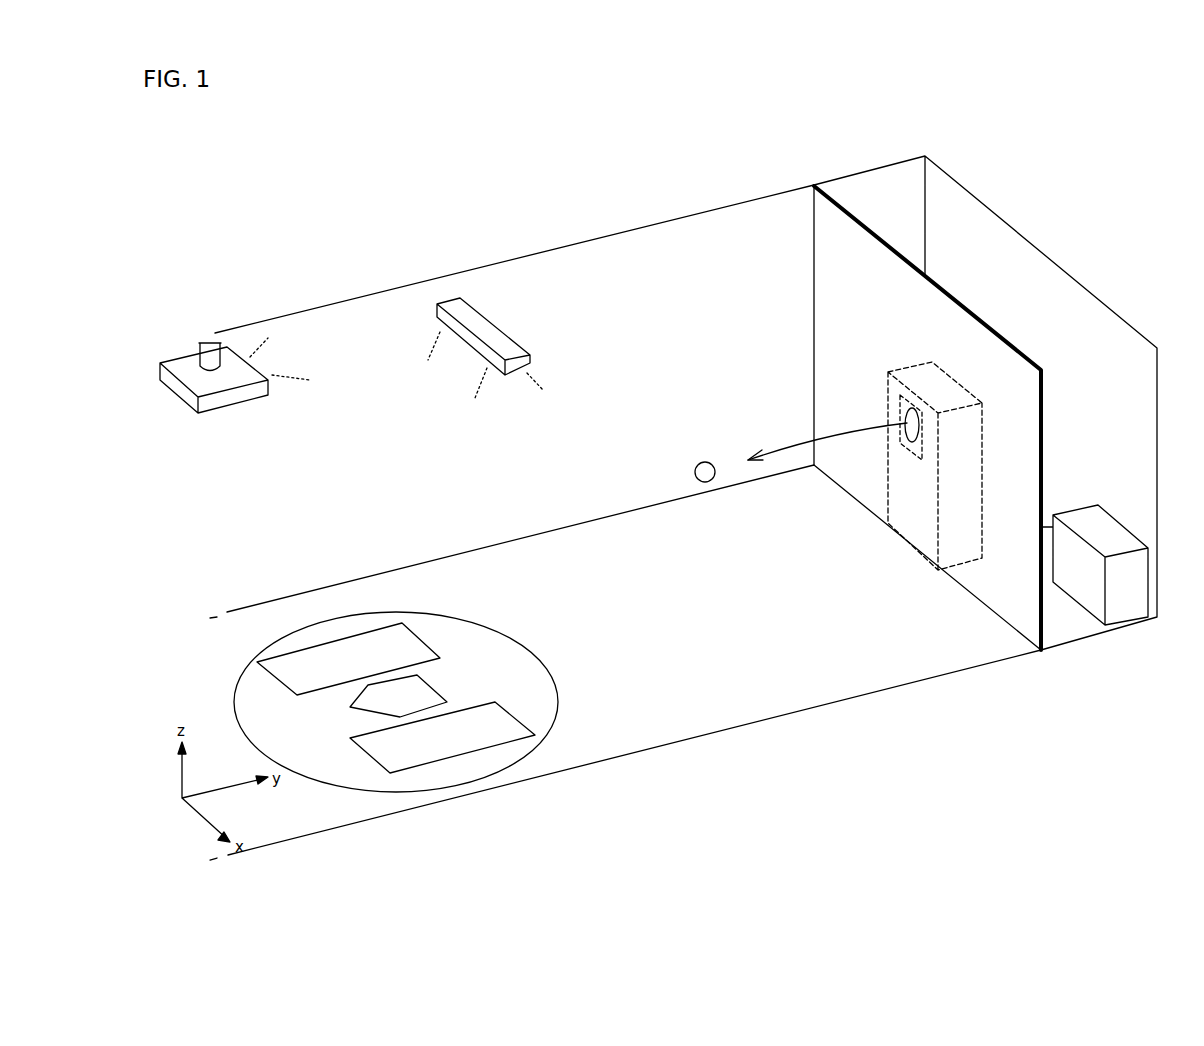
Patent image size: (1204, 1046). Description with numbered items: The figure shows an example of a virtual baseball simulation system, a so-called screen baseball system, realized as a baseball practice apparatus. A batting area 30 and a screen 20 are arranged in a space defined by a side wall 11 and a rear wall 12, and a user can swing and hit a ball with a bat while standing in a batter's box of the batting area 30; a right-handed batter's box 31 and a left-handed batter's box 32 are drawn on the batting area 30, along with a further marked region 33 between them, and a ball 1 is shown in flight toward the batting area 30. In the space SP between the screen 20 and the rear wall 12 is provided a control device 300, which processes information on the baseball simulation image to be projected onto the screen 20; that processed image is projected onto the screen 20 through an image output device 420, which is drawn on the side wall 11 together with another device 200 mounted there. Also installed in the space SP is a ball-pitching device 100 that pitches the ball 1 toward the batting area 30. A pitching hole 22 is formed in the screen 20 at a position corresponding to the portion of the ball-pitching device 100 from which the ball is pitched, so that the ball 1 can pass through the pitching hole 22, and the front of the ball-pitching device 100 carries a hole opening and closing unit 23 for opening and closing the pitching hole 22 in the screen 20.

The ball 1 is at (703, 462).
The side wall 11 is at (580, 243).
The rear wall 12 is at (1053, 262).
The screen 20 is at (892, 250).
The pitching hole 22 is at (905, 418).
The hole opening and closing unit 23 is at (897, 443).
The batting area 30 is at (562, 677).
The right-handed batter's box 31 is at (427, 640).
The left-handed batter's box 32 is at (518, 717).
The third sensor 33 is at (420, 688).
The ball-pitching device 100 is at (887, 488).
The light source 200 is at (493, 327).
The control device 300 is at (1120, 600).
The image output device 420 is at (228, 398).
The space SP is at (1060, 392).